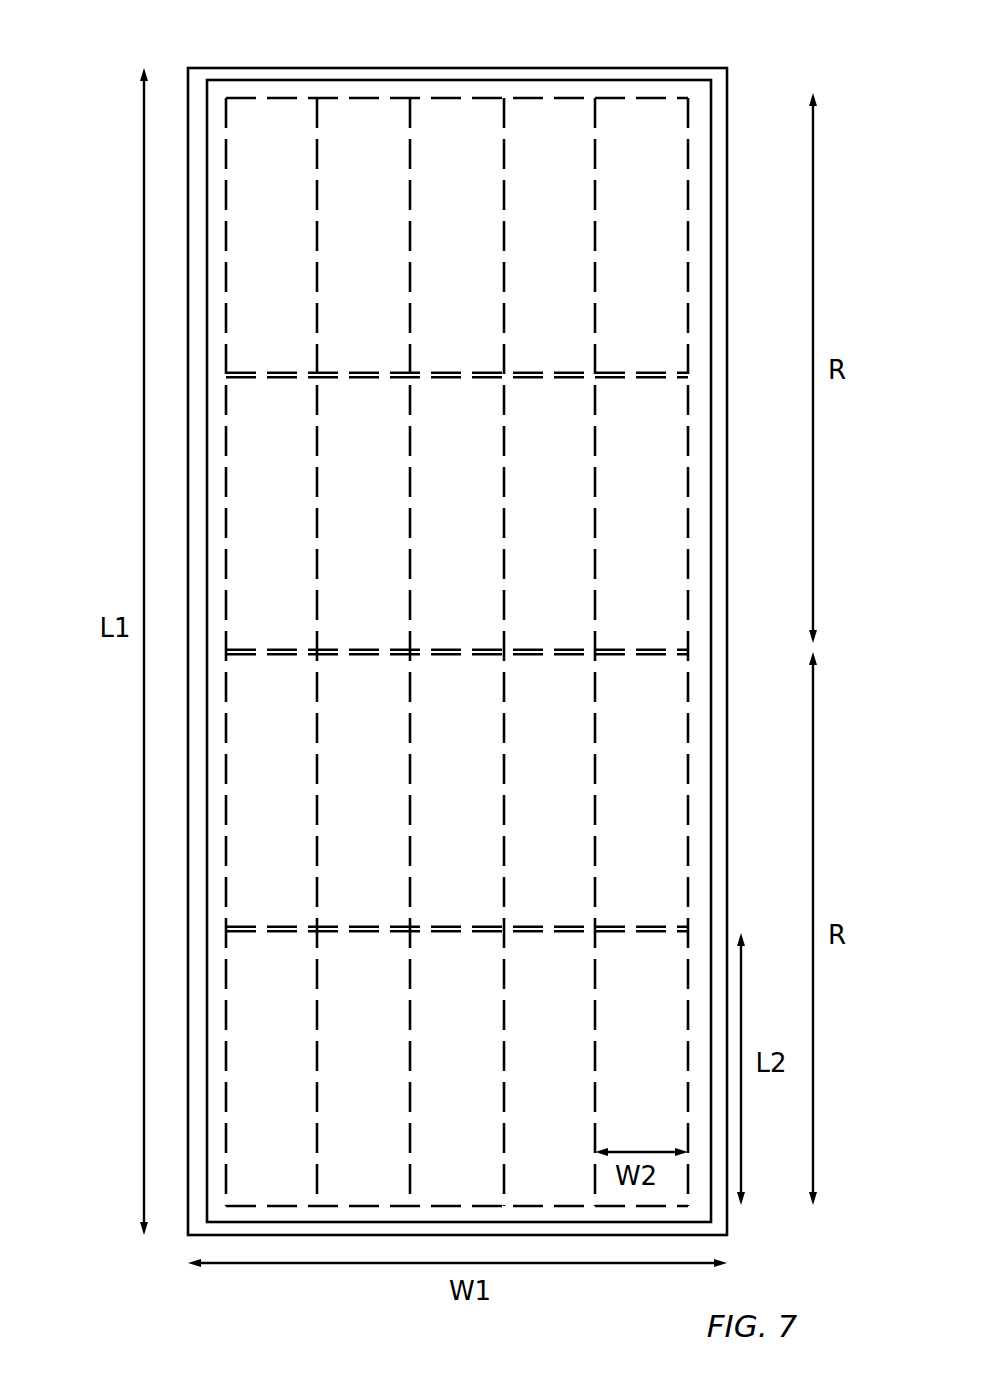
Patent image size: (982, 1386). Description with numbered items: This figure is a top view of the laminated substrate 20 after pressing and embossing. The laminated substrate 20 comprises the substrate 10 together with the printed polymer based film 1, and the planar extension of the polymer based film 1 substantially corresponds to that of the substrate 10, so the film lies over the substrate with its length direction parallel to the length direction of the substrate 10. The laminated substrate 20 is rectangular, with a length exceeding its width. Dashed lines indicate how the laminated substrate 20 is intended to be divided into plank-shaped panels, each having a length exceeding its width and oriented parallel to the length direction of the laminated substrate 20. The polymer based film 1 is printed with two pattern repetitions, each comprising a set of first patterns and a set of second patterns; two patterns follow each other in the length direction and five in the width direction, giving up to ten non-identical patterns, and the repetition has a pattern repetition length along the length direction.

The printed polymer based film 1 is at (703, 104).
The substrate 10 is at (725, 155).
The laminated substrate 20 is at (735, 105).